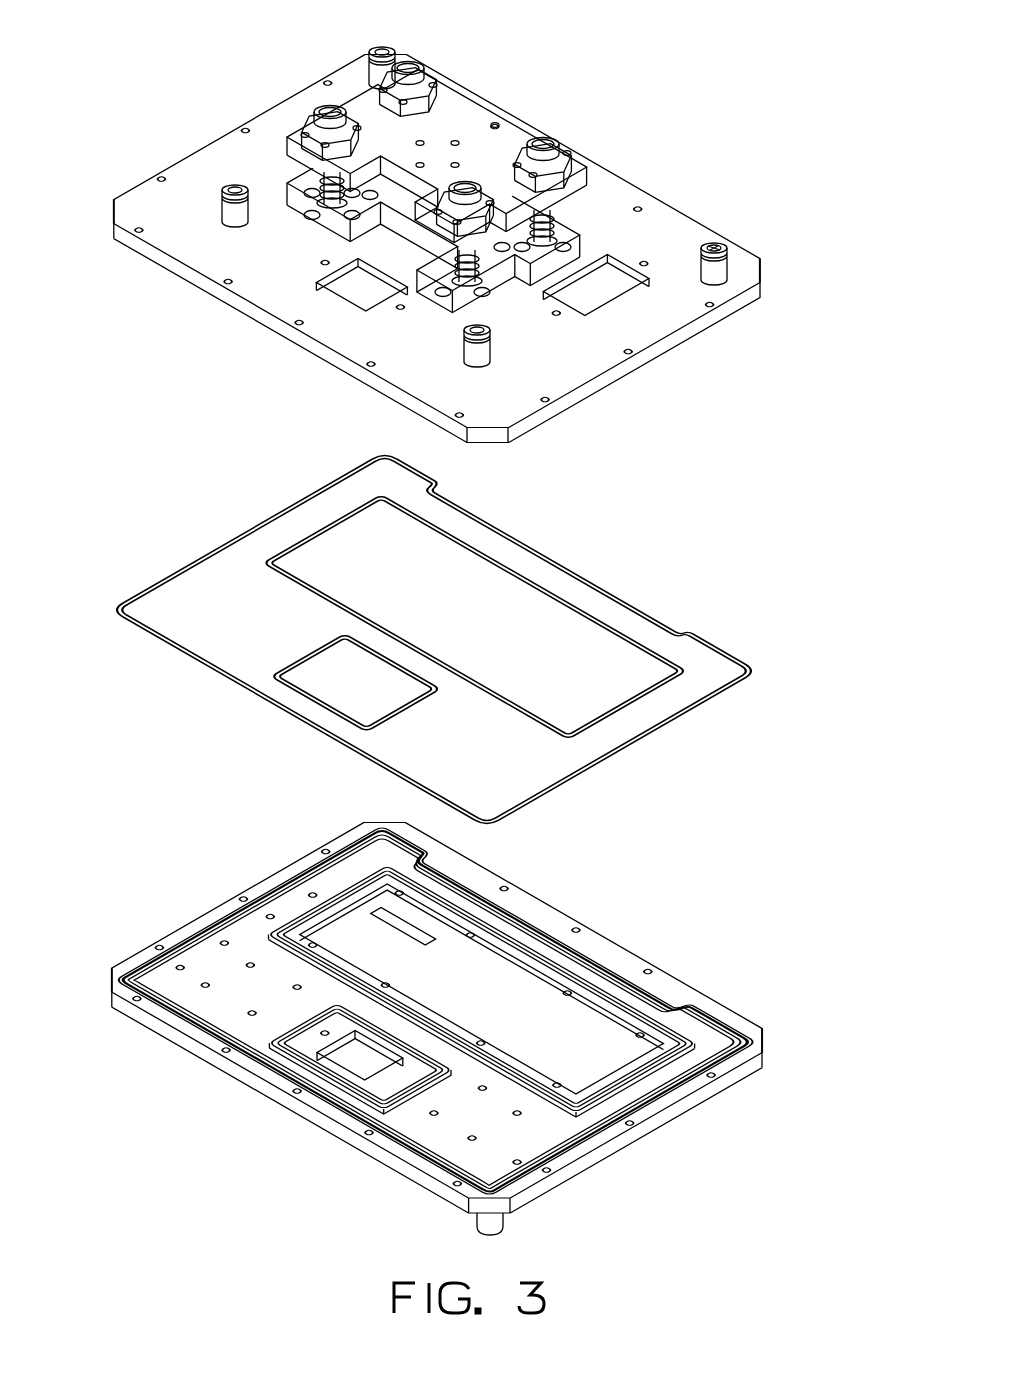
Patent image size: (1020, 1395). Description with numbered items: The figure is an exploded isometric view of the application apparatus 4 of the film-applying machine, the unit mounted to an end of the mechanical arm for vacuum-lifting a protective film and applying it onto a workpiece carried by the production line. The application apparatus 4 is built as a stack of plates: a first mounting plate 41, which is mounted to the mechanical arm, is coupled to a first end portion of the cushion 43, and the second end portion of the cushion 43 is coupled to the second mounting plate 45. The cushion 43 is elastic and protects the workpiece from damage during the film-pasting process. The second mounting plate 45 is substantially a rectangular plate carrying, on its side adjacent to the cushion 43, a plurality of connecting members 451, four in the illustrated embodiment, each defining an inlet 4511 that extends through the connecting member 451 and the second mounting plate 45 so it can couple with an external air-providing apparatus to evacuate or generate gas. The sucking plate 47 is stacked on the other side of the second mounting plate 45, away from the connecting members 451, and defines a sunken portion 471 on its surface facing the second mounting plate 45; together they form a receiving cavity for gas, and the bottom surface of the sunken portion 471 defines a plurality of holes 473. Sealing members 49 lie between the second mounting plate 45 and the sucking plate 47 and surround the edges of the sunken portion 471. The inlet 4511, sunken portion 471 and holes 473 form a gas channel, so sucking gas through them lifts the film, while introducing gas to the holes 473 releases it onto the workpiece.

The application apparatus 4 is at (138, 76).
The first mounting plate 41 is at (438, 138).
The cushion 43 is at (557, 222).
The second mounting plate 45 is at (660, 223).
The connecting member 451 is at (717, 267).
The inlet 4511 is at (713, 244).
The sucking plate 47 is at (566, 898).
The sunken portion 471 is at (543, 1140).
The holes 473 is at (522, 1160).
The sealing member 49 is at (567, 572).